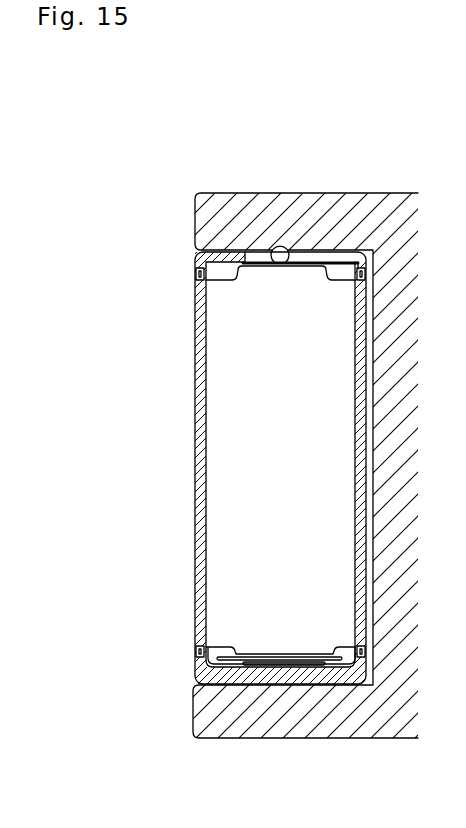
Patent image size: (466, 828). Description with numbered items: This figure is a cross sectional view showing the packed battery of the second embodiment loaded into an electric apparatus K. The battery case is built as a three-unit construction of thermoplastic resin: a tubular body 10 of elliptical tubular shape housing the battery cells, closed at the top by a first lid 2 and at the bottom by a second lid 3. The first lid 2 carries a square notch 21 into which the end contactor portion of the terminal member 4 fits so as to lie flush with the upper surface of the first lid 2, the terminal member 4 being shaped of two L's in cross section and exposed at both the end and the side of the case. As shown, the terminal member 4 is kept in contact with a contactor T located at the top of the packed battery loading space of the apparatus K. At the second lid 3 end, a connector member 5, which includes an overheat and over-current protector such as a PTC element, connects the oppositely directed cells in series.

The first lid 2 is at (196, 261).
The second lid 3 is at (195, 673).
The terminal member 4 is at (322, 262).
The connector member 5 is at (316, 667).
The tubular body 10 is at (195, 558).
The square notch 21 is at (354, 265).
The contactor T is at (281, 266).
The electric apparatus K is at (230, 731).